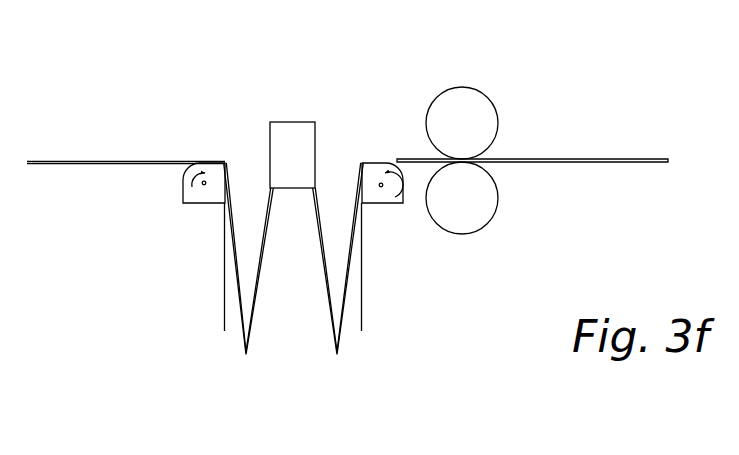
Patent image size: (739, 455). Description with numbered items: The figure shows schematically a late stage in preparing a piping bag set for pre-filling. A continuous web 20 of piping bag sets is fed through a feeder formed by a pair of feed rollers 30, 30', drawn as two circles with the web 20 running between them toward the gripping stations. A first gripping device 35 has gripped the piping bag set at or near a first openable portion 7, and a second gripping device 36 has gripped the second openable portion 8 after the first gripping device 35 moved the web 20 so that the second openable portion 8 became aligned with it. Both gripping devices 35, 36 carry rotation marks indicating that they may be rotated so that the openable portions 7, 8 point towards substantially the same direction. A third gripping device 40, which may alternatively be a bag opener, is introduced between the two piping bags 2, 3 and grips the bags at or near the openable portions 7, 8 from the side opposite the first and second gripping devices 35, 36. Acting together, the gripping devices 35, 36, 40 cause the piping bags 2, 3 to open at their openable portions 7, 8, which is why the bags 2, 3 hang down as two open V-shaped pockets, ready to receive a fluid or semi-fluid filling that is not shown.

The piping bag 2 is at (246, 364).
The piping bag 3 is at (337, 364).
The first openable portion 7 is at (245, 169).
The second openable portion 8 is at (339, 166).
The continuous web 20 is at (420, 158).
The feed roller 30 is at (509, 120).
The feed roller 30' is at (510, 200).
The first gripping device 35 is at (203, 200).
The second gripping device 36 is at (380, 200).
The third gripping device 40 is at (302, 132).